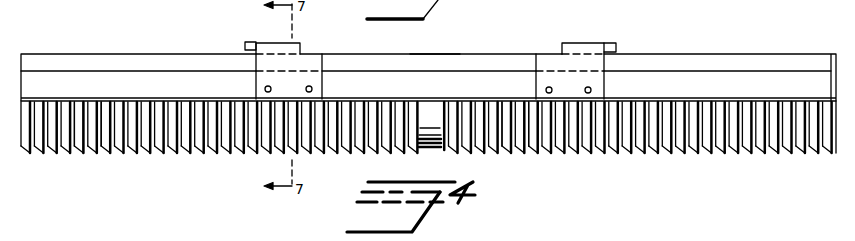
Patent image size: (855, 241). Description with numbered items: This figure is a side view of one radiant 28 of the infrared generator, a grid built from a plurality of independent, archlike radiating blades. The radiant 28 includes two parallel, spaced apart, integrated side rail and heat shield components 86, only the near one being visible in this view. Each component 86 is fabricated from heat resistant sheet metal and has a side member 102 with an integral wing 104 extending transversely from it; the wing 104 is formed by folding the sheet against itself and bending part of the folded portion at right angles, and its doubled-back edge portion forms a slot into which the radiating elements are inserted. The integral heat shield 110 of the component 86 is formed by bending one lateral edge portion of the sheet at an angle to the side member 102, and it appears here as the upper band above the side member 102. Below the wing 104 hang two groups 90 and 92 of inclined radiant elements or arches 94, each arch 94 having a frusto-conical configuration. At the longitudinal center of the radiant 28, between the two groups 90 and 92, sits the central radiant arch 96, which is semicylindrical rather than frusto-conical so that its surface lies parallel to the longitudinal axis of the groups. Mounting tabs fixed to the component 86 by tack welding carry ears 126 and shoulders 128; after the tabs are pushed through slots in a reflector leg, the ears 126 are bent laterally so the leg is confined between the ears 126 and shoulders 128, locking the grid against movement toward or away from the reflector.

The radiant 28 is at (626, 154).
The integrated side rail and heat shield 86 is at (431, 54).
The group of inclined radiant elements 90 is at (172, 155).
The group of inclined radiant elements 92 is at (735, 154).
The inclined radiant element 94 is at (106, 154).
The central radiant arch 96 is at (432, 148).
The side member 102 is at (122, 77).
The wing 104 is at (180, 98).
The heat shield 110 is at (80, 57).
The ear 126 is at (257, 42).
The shoulder 128 is at (303, 52).